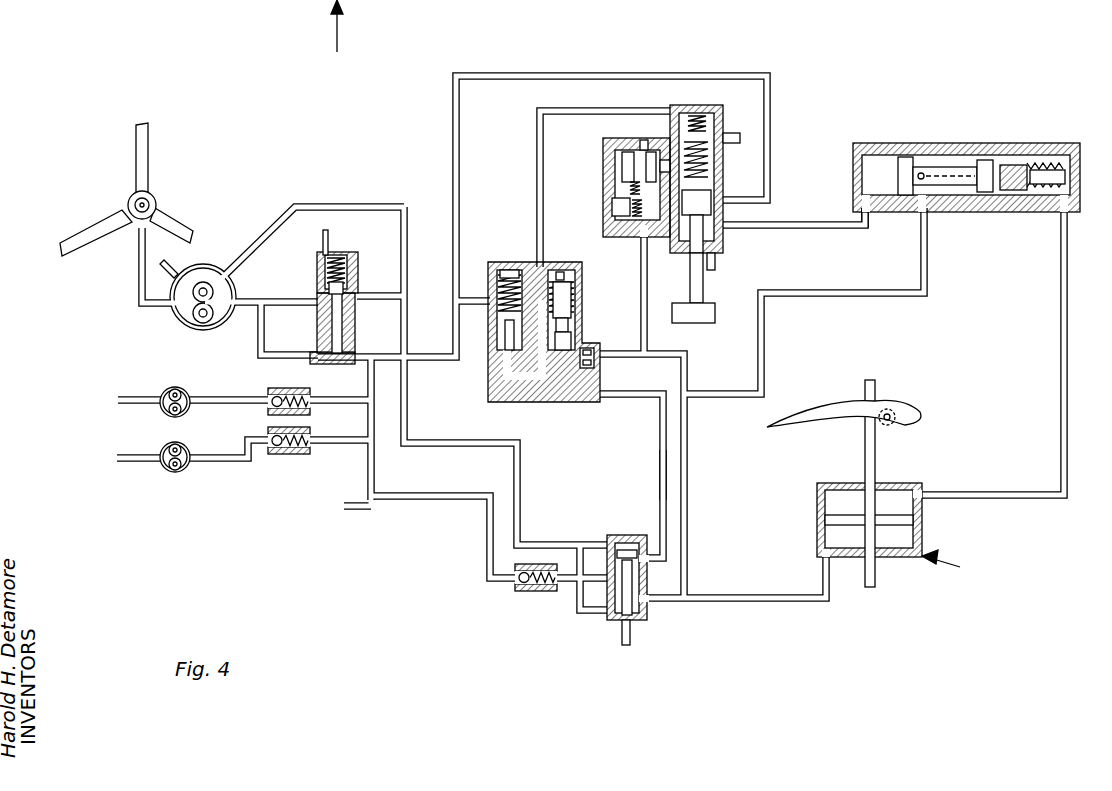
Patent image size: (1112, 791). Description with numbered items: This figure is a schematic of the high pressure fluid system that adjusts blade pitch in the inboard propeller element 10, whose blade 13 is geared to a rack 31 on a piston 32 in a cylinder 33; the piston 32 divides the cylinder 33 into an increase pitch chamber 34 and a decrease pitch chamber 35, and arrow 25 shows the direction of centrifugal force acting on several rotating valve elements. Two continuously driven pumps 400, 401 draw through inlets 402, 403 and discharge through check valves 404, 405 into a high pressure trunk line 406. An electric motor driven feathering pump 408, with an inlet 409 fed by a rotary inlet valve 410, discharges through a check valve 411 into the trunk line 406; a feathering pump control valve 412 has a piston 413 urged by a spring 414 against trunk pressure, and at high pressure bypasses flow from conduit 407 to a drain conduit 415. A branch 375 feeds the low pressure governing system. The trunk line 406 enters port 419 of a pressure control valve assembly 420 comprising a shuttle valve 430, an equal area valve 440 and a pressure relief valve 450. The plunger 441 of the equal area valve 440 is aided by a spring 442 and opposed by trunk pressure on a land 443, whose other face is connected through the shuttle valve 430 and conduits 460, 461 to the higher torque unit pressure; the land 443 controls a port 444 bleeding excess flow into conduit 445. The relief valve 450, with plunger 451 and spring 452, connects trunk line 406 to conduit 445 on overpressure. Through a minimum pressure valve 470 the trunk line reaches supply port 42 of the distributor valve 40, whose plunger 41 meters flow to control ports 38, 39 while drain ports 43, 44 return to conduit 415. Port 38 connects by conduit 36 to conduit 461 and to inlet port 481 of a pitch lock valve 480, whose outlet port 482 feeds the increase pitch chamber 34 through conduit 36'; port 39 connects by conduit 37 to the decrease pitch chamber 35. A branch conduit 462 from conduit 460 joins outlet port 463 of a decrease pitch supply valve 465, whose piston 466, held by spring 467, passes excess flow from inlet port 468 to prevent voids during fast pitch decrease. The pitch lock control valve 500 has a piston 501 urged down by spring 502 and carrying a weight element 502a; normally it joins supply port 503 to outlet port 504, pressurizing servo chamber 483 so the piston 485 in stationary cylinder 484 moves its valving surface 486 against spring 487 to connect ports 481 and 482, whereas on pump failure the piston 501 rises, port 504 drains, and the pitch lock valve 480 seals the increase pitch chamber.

The inboard propeller element 10 is at (987, 583).
The blade 13 is at (905, 410).
The arrow 25 is at (336, 18).
The rack 31 is at (860, 388).
The piston 32 is at (836, 506).
The cylinder 33 is at (816, 514).
The increase pitch chamber 34 is at (896, 500).
The decrease pitch chamber 35 is at (900, 556).
The conduit 36 is at (638, 475).
The conduit 36' is at (993, 447).
The conduit 37 is at (762, 603).
The port 38 is at (650, 560).
The port 39 is at (655, 600).
The distributor valve 40 is at (656, 517).
The plunger 41 is at (632, 640).
The supply port 42 is at (600, 590).
The drain port 43 is at (607, 540).
The drain port 44 is at (622, 602).
The branch conduit 375 is at (362, 520).
The pump 400 is at (160, 410).
The pump 401 is at (178, 472).
The inlet 402 is at (150, 394).
The inlet 403 is at (142, 466).
The check valve 404 is at (270, 392).
The check valve 405 is at (290, 454).
The high pressure trunk line 406 is at (455, 157).
The conduit 407 is at (279, 300).
The feathering pump 408 is at (206, 290).
The inlet 409 is at (132, 276).
The rotary inlet valve 410 is at (208, 167).
The check valve 411 is at (302, 346).
The feathering pump control valve 412 is at (373, 230).
The piston 413 is at (345, 320).
The spring 414 is at (356, 284).
The drain conduit 415 is at (405, 274).
The port 419 is at (472, 304).
The pressure control valve assembly 420 is at (581, 245).
The shuttle valve 430 is at (668, 384).
The equal area valve 440 is at (648, 303).
The plunger 441 is at (586, 346).
The spring 442 is at (578, 283).
The land 443 is at (586, 328).
The port 444 is at (540, 396).
The conduit 445 is at (535, 162).
The pressure relief valve 450 is at (500, 340).
The plunger 451 is at (500, 386).
The spring 452 is at (492, 268).
The conduit 460 is at (688, 354).
The conduit 461 is at (660, 400).
The branch conduit 462 is at (644, 262).
The outlet port 463 is at (638, 240).
The decrease pitch supply valve 465 is at (614, 140).
The piston 466 is at (612, 186).
The spring 467 is at (612, 206).
The inlet port 468 is at (672, 170).
The minimum pressure valve 470 is at (526, 592).
The pitch lock valve 480 is at (940, 143).
The inlet port 481 is at (918, 212).
The outlet port 482 is at (1068, 216).
The servo chamber 483 is at (872, 158).
The stationary cylinder 484 is at (962, 214).
The piston 485 is at (1038, 243).
The valving surface 486 is at (986, 160).
The spring 487 is at (1058, 160).
The pitch lock control valve 500 is at (725, 162).
The piston 501 is at (712, 197).
The spring 502 is at (702, 130).
The weight element 502a is at (704, 313).
The supply port 503 is at (745, 200).
The outlet port 504 is at (726, 228).